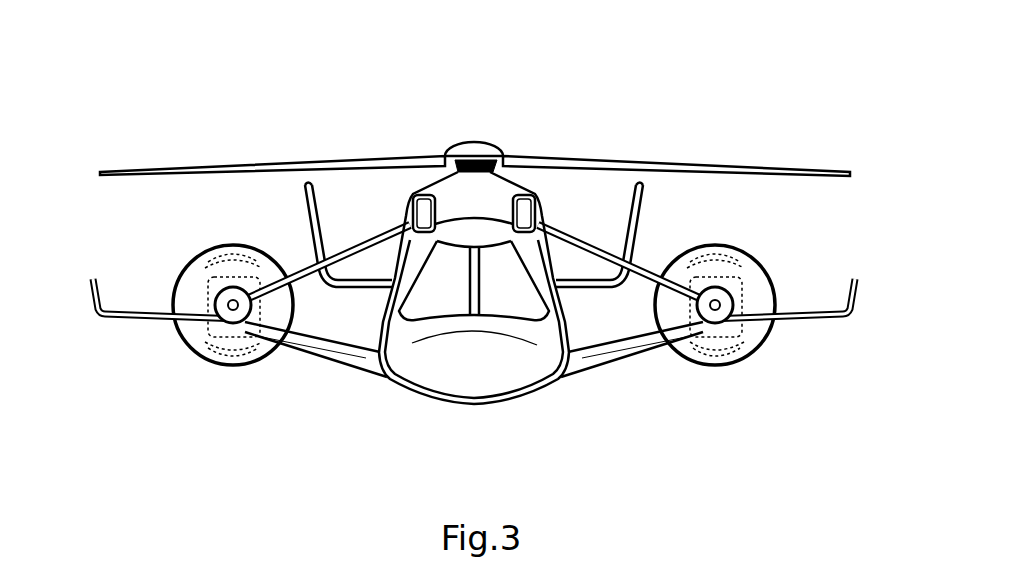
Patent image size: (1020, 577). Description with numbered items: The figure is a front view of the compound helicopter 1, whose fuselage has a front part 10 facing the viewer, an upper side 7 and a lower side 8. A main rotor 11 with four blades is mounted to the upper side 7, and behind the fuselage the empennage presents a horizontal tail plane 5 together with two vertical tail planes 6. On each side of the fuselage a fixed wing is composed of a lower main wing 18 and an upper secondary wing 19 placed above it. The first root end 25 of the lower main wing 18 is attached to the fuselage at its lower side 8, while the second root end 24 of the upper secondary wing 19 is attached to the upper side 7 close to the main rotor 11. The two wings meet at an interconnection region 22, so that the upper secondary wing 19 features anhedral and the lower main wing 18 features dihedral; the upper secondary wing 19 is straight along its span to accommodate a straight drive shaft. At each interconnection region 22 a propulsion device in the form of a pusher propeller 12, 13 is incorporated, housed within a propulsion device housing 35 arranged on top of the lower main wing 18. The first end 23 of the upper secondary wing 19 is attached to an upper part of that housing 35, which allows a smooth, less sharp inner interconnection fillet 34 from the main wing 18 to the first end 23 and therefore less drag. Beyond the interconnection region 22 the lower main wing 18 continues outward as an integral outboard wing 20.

The compound helicopter 1 is at (703, 102).
The horizontal tail plane 5 is at (650, 352).
The vertical tail planes 6 is at (302, 189).
The upper side 7 is at (473, 219).
The lower side 8 is at (431, 398).
The front part 10 is at (479, 371).
The main rotor 11 is at (480, 140).
The pusher propeller 12 is at (774, 268).
The pusher propeller 13 is at (184, 267).
The lower main wing 18 is at (322, 366).
The upper secondary wing 19 is at (268, 349).
The outboard wing 20 is at (157, 328).
The interconnection region 22 is at (220, 348).
The first end of the upper secondary wing 23 is at (216, 250).
The second root end 24 is at (403, 219).
The first root end 25 is at (382, 380).
The inner interconnection fillet 34 is at (273, 278).
The propulsion device housing 35 is at (205, 299).